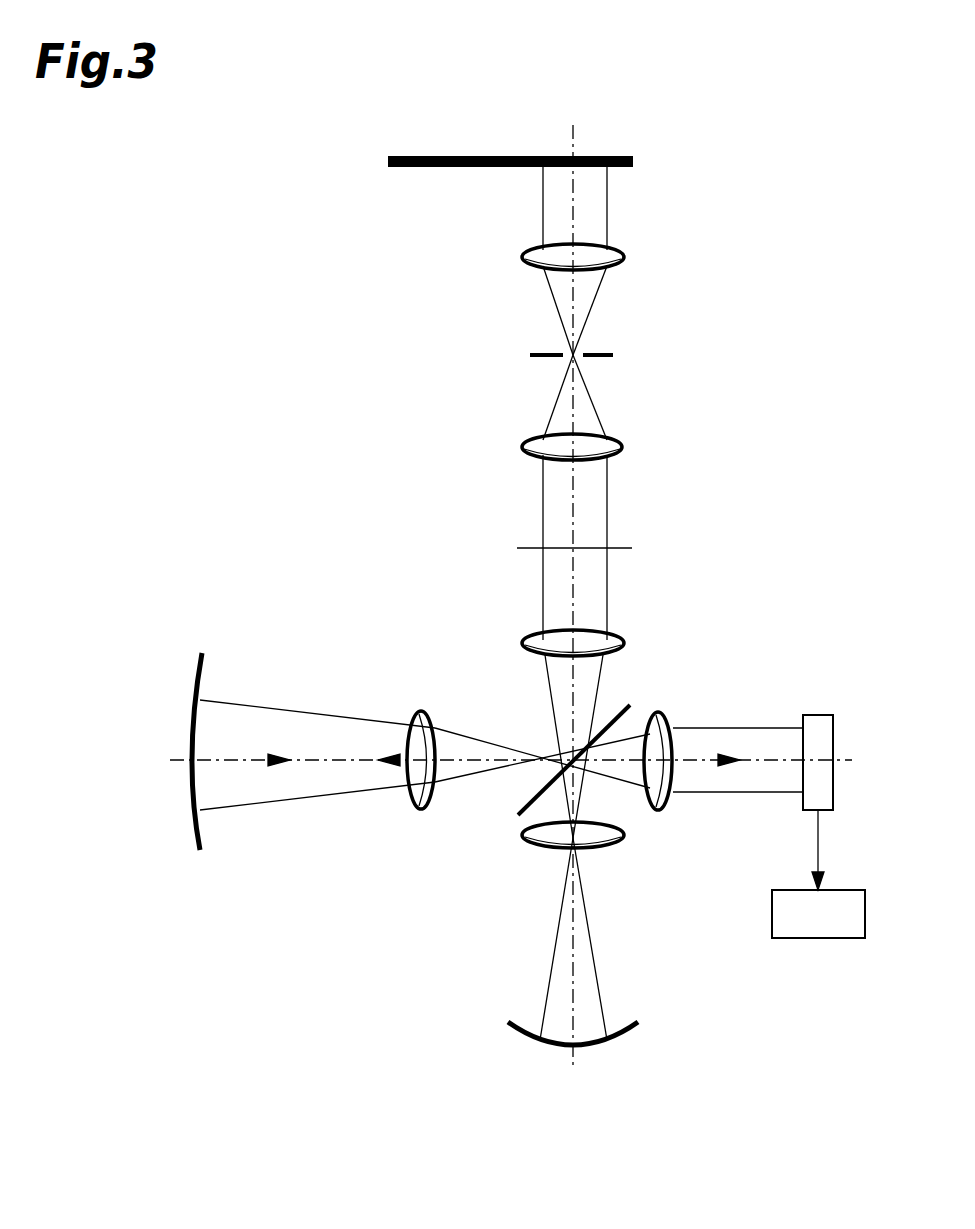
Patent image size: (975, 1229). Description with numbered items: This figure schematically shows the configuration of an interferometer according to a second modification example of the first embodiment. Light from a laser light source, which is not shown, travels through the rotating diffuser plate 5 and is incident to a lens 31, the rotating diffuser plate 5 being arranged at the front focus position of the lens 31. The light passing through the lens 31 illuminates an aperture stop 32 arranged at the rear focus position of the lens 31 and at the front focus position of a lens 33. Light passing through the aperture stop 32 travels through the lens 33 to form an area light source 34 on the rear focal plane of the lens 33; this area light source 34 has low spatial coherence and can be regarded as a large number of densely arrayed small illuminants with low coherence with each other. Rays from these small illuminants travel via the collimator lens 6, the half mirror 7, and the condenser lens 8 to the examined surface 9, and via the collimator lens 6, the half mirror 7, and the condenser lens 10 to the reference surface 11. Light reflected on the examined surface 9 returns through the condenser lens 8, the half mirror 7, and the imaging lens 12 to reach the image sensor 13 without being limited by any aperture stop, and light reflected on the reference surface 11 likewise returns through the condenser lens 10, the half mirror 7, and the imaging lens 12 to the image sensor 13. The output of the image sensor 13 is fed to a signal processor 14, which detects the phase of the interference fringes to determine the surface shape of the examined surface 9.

The rotating diffuser plate 5 is at (598, 157).
The lens 31 is at (623, 258).
The aperture stop 32 is at (590, 352).
The lens 33 is at (623, 447).
The area light source 34 is at (552, 546).
The collimator lens 6 is at (535, 645).
The half mirror 7 is at (530, 800).
The condenser lens 8 is at (418, 715).
The examined surface 9 is at (198, 720).
The condenser lens 10 is at (623, 836).
The reference surface 11 is at (553, 1042).
The imaging lens 12 is at (658, 718).
The image sensor 13 is at (818, 723).
The signal processor 14 is at (803, 931).